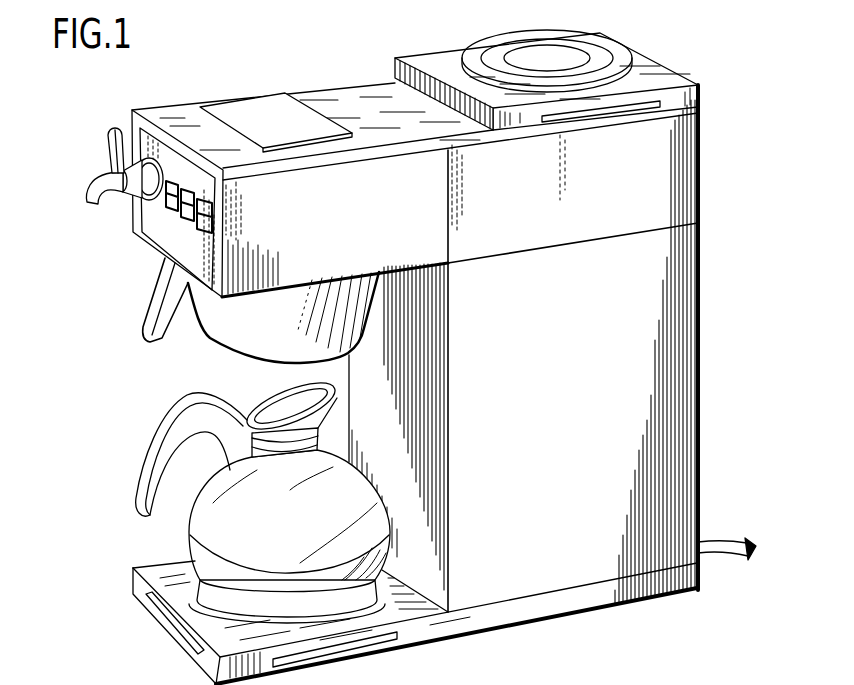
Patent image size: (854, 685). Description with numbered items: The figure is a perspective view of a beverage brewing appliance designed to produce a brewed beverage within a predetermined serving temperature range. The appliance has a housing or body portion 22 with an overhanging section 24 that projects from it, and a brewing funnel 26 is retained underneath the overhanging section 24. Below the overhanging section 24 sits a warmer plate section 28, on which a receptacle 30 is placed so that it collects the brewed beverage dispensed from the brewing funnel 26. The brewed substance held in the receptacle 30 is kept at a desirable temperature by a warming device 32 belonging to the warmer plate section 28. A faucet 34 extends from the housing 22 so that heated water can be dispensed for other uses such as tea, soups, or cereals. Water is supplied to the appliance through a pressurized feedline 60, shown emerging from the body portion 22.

The housing body 22 is at (682, 192).
The filter basket support strap 24 is at (188, 283).
The filter basket 26 is at (76, 135).
The base 28 is at (133, 593).
The carafe 30 is at (195, 530).
The warming plate 32 is at (213, 600).
The hot water faucet 34 is at (76, 174).
The power cord 60 is at (729, 557).